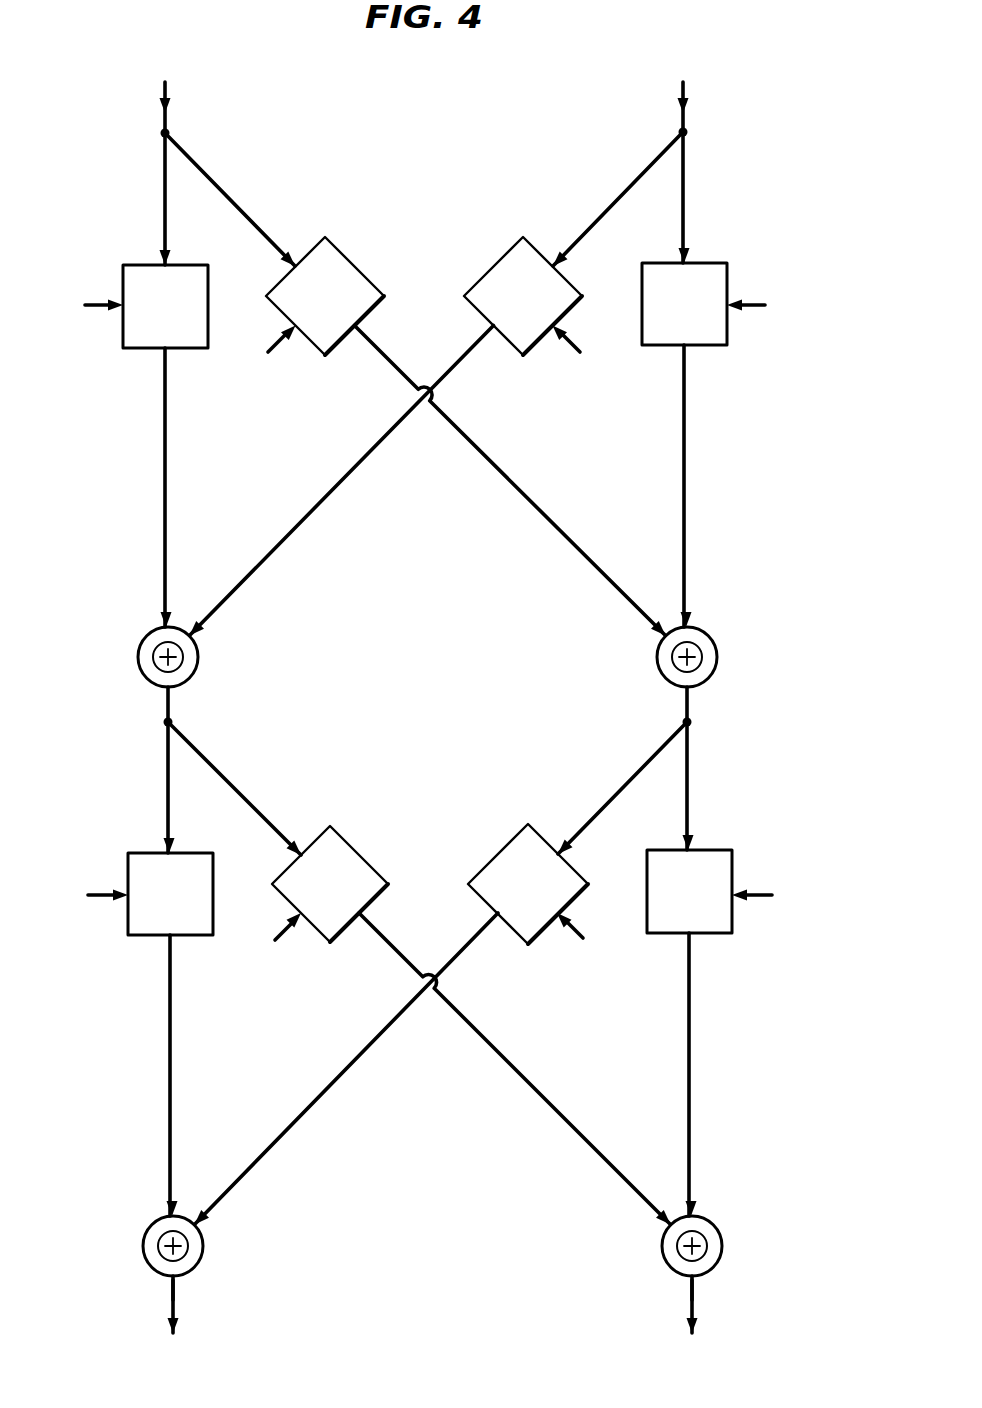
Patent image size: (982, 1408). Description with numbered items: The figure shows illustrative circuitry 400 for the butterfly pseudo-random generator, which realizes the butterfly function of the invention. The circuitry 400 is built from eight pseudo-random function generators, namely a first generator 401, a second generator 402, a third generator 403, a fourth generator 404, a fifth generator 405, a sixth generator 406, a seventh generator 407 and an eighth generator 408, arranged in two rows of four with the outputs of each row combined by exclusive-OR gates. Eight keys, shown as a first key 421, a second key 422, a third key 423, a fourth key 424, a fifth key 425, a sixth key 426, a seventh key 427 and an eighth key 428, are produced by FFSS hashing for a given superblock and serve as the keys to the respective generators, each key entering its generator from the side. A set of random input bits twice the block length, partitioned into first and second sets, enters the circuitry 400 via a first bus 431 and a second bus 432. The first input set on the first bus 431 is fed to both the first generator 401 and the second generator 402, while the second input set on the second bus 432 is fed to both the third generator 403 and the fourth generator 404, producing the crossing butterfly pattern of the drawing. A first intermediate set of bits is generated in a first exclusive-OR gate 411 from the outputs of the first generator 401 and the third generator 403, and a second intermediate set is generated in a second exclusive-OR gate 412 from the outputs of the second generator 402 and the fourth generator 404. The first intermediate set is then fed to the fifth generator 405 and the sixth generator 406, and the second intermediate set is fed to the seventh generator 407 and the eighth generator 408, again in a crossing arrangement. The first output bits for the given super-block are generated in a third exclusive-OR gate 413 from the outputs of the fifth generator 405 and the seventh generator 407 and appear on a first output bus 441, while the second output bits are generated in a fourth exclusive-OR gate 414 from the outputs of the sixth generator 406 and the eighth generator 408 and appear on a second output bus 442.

The circuitry 400 is at (403, 120).
The pseudo-random function generator G(1) 401 is at (137, 263).
The pseudo-random function generator G(2) 402 is at (335, 245).
The pseudo-random function generator G(3) 403 is at (505, 250).
The pseudo-random function generator G(4) 404 is at (705, 262).
The pseudo-random function generator G(5) 405 is at (140, 852).
The pseudo-random function generator G(6) 406 is at (340, 835).
The pseudo-random function generator G(7) 407 is at (510, 840).
The pseudo-random function generator G(8) 408 is at (708, 850).
The exclusive-OR gate 411 is at (200, 662).
The exclusive-OR gate 412 is at (658, 662).
The exclusive-OR gate 413 is at (145, 1237).
The exclusive-OR gate 414 is at (722, 1237).
The key k1 421 is at (96, 308).
The key k2 422 is at (283, 346).
The key k3 423 is at (568, 348).
The key k4 424 is at (752, 310).
The key k5 425 is at (99, 898).
The key k6 426 is at (285, 936).
The key k7 427 is at (572, 942).
The key k8 428 is at (757, 900).
The bus 431 is at (167, 130).
The bus 432 is at (680, 128).
The bus 441 is at (176, 1295).
The bus 442 is at (688, 1298).